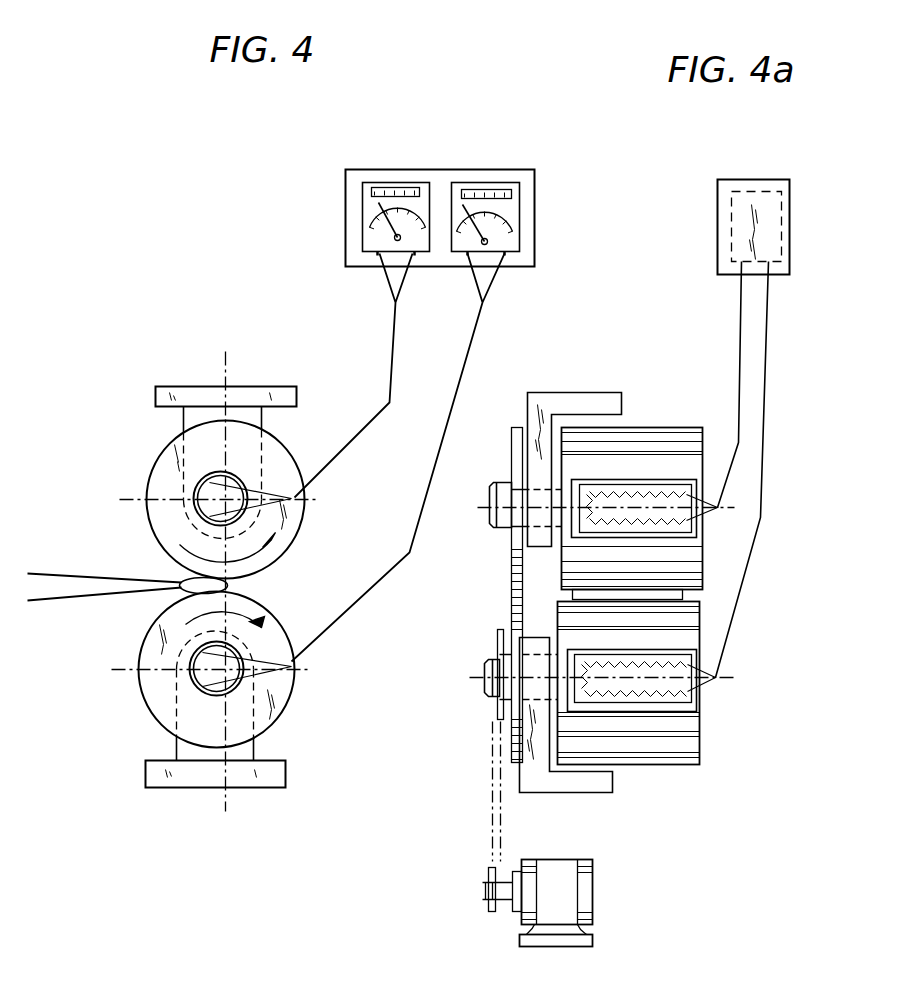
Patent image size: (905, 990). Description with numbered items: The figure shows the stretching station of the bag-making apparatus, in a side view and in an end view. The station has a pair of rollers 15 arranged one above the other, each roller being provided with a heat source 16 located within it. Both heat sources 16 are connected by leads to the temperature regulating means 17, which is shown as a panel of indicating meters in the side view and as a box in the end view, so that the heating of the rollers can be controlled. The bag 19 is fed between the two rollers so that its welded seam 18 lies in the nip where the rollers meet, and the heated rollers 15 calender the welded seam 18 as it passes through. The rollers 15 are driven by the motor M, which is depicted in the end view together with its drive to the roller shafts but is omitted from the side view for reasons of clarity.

In FIG. 4, the roller 15 is at (166, 447).
In FIG. 4a, the roller 15 is at (667, 438).
In FIG. 4, the heat source 16 is at (207, 490).
In FIG. 4a, the heat source 16 is at (683, 515).
In FIG. 4, the temperature regulating means 17 is at (537, 222).
In FIG. 4a, the temperature regulating means 17 is at (718, 228).
In FIG. 4, the welded seam 18 is at (230, 587).
In FIG. 4, the bag 19 is at (67, 598).
In FIG. 4a, the motor M is at (593, 896).